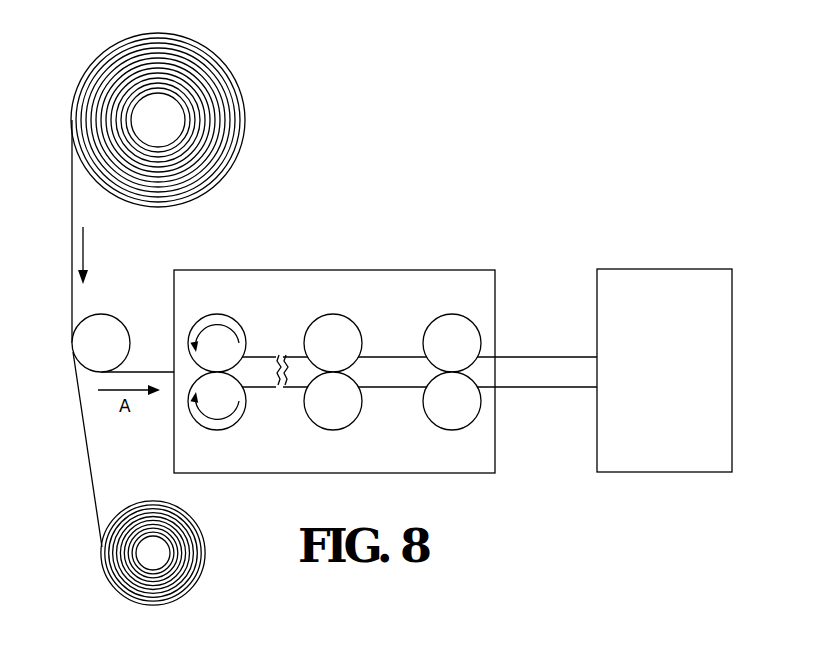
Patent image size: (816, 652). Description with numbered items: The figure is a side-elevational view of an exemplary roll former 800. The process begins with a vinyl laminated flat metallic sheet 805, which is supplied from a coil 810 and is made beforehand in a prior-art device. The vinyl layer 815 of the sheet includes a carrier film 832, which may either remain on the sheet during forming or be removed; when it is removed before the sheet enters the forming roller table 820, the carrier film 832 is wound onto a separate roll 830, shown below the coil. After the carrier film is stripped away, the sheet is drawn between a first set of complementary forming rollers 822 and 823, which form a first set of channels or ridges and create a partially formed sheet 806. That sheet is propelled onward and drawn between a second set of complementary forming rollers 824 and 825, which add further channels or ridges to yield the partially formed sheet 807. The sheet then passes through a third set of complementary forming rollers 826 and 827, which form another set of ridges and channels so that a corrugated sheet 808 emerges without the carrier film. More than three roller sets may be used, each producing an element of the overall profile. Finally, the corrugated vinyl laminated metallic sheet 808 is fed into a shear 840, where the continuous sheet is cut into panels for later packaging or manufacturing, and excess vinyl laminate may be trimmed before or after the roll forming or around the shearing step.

The roll former 800 is at (368, 45).
The vinyl laminated flat metallic sheet 805 is at (72, 200).
The partially formed sheet 806 is at (266, 357).
The partially formed sheet 807 is at (384, 357).
The corrugated sheet 808 is at (535, 357).
The coil of metal strip 810 is at (207, 44).
The vinyl layer 815 is at (72, 275).
The forming roller table 820 is at (434, 270).
The first complementary forming roller 822 is at (244, 344).
The first complementary forming roller 823 is at (238, 405).
The second complementary forming roller 824 is at (358, 341).
The second complementary forming roller 825 is at (355, 405).
The third complementary forming roller 826 is at (460, 336).
The third complementary forming roller 827 is at (433, 405).
The separate roll 830 is at (130, 600).
The carrier film 832 is at (88, 460).
The shear 840 is at (664, 269).